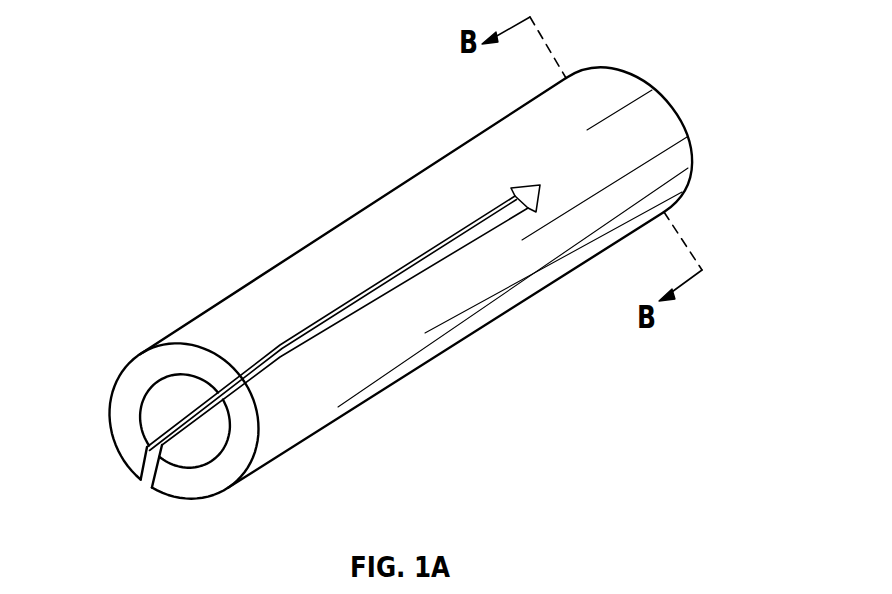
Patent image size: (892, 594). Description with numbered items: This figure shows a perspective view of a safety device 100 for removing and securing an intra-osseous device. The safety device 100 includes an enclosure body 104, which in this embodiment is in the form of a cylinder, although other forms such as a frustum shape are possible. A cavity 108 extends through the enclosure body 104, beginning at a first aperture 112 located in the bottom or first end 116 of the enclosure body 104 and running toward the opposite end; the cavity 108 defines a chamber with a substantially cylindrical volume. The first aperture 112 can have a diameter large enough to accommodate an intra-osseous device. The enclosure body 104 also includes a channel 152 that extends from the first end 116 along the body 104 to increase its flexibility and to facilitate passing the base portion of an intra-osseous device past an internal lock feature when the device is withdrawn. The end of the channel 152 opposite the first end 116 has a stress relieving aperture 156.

The safety device 100 is at (367, 274).
The enclosure body 104 is at (541, 130).
The cavity 108 is at (163, 403).
The first aperture 112 is at (157, 380).
The first end 116 is at (190, 356).
The channel 152 is at (402, 268).
The stress relieving aperture 156 is at (527, 187).